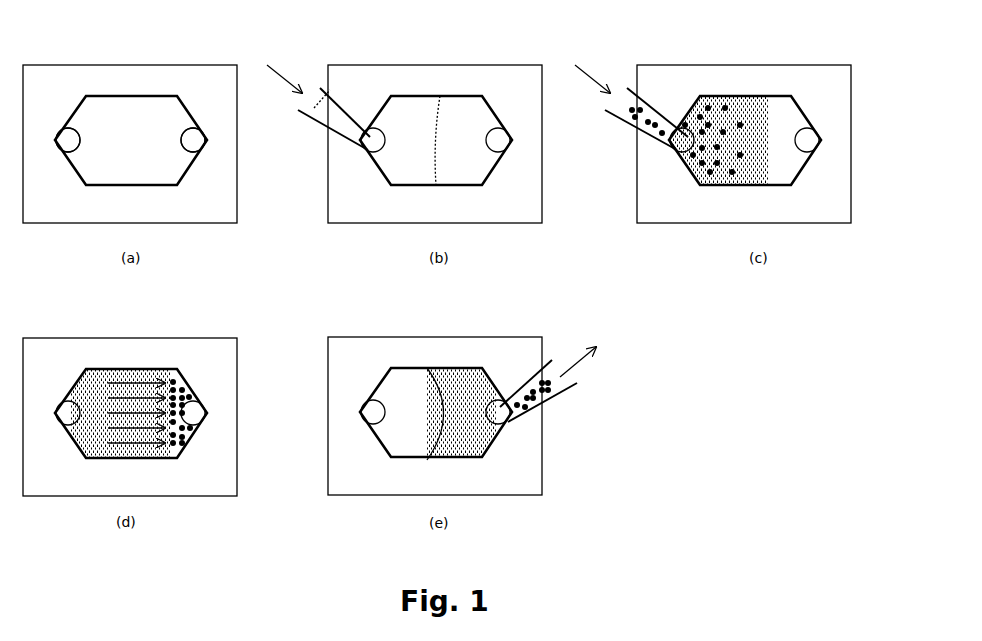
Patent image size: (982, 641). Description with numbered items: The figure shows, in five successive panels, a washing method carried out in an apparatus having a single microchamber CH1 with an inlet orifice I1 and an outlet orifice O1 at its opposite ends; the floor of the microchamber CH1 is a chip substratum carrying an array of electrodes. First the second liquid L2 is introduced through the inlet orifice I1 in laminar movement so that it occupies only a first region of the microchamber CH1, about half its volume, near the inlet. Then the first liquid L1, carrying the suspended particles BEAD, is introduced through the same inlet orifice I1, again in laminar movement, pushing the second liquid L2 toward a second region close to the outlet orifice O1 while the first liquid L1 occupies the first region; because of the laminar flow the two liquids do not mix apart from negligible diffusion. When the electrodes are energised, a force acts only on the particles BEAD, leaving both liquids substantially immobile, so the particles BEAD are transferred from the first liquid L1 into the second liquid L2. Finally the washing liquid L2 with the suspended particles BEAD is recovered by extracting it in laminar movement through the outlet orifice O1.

The inlet orifice I1 is at (76, 130).
The outlet orifice O1 is at (202, 135).
The microchamber CH1 is at (138, 142).
The second liquid L2 is at (340, 118).
The first liquid L1 is at (640, 92).
The particles BEAD is at (730, 106).